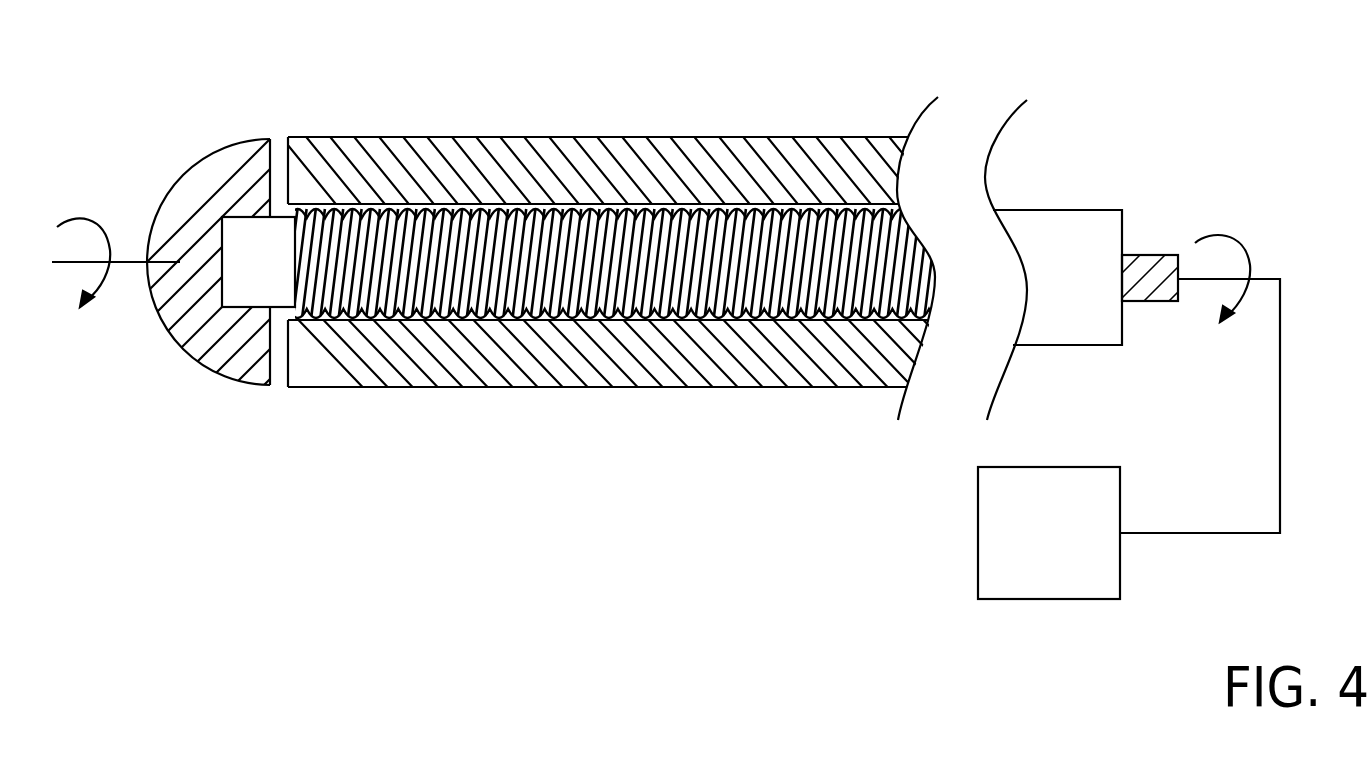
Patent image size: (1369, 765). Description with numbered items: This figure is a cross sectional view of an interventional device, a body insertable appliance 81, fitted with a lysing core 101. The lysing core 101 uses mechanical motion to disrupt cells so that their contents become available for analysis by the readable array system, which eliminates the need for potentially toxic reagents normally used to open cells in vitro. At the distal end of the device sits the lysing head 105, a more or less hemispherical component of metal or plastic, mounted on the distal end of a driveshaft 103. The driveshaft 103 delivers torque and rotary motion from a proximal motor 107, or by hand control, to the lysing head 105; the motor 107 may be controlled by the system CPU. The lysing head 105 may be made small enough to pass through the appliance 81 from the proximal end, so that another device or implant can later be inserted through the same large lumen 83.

The body insertable appliance 81 is at (559, 137).
The large lumen 83 is at (432, 205).
The lysing core 101 is at (274, 309).
The driveshaft 103 is at (653, 312).
The lysing head 105 is at (225, 146).
The motor 107 is at (1065, 600).